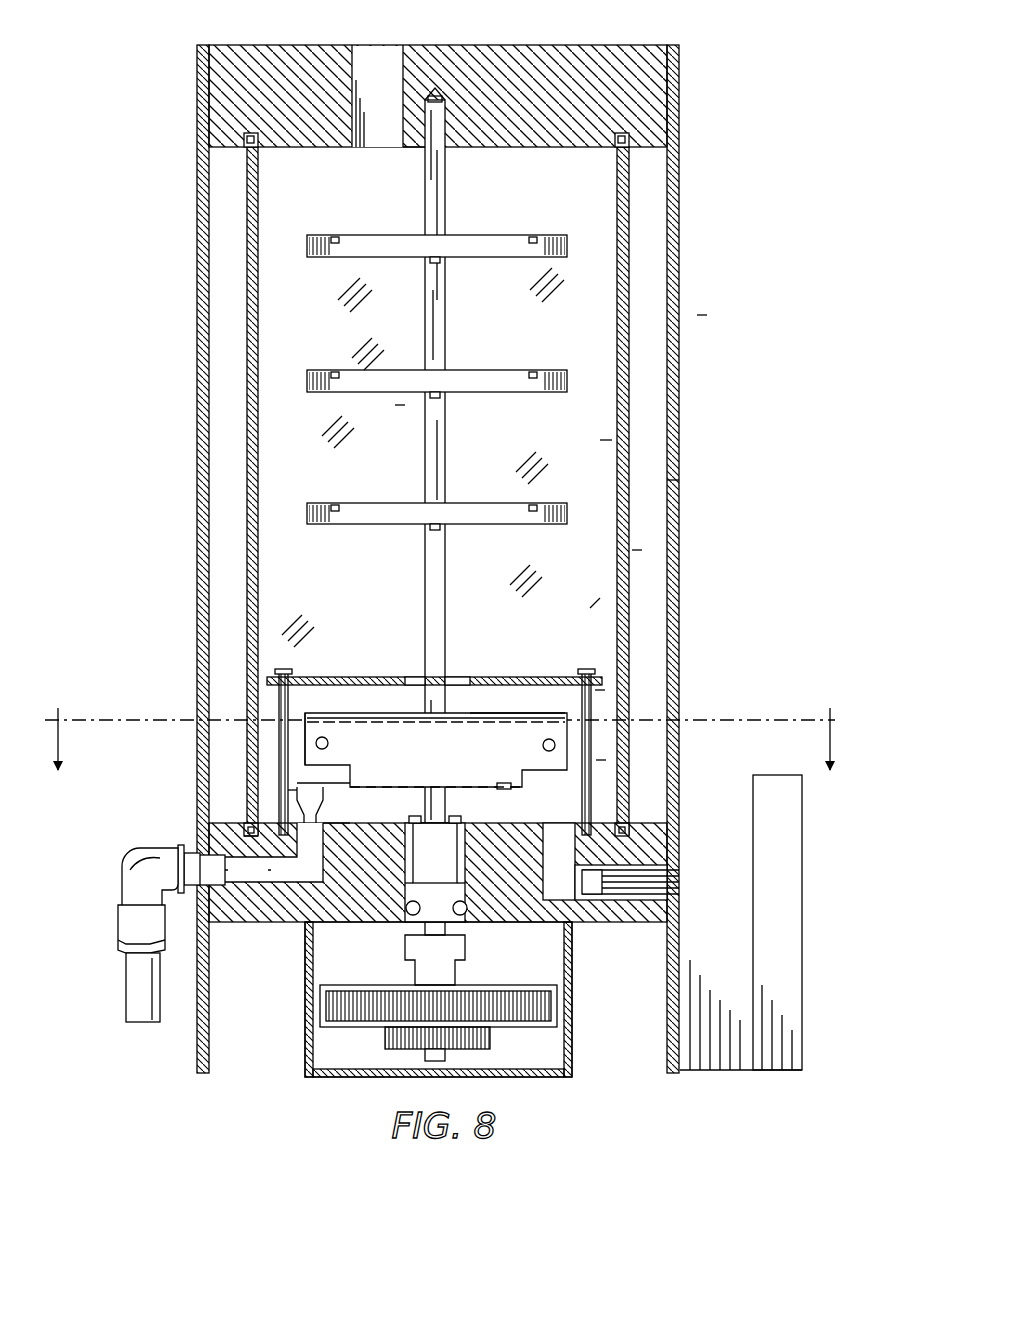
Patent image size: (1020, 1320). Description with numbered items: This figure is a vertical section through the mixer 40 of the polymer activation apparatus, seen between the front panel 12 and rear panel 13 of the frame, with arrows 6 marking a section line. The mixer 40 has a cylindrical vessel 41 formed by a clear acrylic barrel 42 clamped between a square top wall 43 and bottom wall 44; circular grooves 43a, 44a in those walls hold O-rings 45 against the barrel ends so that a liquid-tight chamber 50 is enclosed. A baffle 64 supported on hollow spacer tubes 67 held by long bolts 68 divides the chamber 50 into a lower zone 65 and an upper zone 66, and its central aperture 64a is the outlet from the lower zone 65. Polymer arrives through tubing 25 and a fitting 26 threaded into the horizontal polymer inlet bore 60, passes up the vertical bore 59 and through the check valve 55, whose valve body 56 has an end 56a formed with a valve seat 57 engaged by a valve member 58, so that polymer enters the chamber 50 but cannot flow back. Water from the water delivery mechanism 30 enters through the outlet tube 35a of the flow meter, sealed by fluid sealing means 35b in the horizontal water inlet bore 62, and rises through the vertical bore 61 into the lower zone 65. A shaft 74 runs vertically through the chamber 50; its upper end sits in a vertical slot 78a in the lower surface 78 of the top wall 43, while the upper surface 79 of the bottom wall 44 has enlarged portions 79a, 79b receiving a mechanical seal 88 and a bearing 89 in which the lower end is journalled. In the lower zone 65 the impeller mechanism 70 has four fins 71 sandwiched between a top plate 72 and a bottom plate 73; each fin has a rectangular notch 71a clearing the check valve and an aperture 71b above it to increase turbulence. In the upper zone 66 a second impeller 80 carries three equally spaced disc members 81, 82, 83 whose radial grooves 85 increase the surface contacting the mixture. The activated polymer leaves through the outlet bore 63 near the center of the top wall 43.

The section line 6- 6 is at (441, 759).
The front panel 12 is at (200, 365).
The rear panel 13 is at (690, 500).
The tubing 25 is at (130, 1008).
The fitting 26 is at (132, 870).
The water delivery mechanism 30 is at (802, 900).
The outlet tube 35a is at (675, 903).
The fluid sealing means 35b is at (636, 900).
The mixer 40 is at (702, 312).
The cylindrical vessel 41 is at (640, 548).
The cylindrical barrel 42 is at (652, 470).
The top wall 43 is at (655, 47).
The circular groove 43a is at (247, 148).
The bottom wall 44 is at (648, 832).
The circular groove 44a is at (252, 828).
The O-rings 45 is at (618, 132).
The liquid-tight chamber 50 is at (605, 440).
The check valve 55 is at (290, 794).
The valve body 56 is at (330, 814).
The end of valve body 56a is at (316, 787).
The valve seat 57 is at (287, 790).
The valve member 58 is at (340, 737).
The vertically oriented bore 59 is at (310, 872).
The polymer inlet bore 60 is at (262, 882).
The vertical bore 61 is at (505, 783).
The water inlet bore 62 is at (562, 882).
The outlet bore 63 is at (390, 47).
The baffle 64 is at (556, 677).
The central aperture 64a is at (420, 677).
The lower zone 65 is at (478, 818).
The upper zone 66 is at (563, 333).
The hollow spacer tubes 67 is at (280, 700).
The long bolts 68 is at (600, 690).
The impeller mechanism 70 is at (502, 753).
The fins 71 is at (372, 730).
The rectangular notch 71a is at (316, 742).
The aperture 71b is at (298, 718).
The top plate 72 is at (505, 712).
The bottom plate 73 is at (600, 760).
The shaft 74 is at (425, 558).
The lower surface of top wall 78 is at (537, 148).
The vertical slot 78a is at (425, 150).
The upper surface of bottom wall 79 is at (537, 824).
The enlarged portion 79a is at (415, 820).
The enlarged portion 79b is at (407, 910).
The impeller 80 is at (400, 410).
The disc member 81 is at (200, 495).
The disc member 82 is at (470, 393).
The disc member 83 is at (470, 258).
The radially extending grooves 85 is at (335, 240).
The mechanical seal 88 is at (453, 822).
The bearing 89 is at (467, 912).